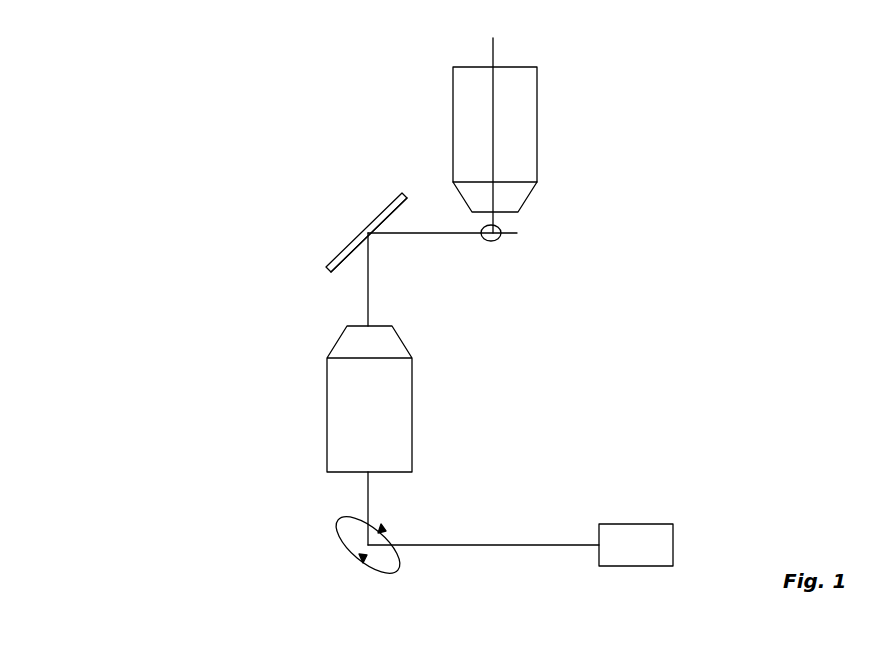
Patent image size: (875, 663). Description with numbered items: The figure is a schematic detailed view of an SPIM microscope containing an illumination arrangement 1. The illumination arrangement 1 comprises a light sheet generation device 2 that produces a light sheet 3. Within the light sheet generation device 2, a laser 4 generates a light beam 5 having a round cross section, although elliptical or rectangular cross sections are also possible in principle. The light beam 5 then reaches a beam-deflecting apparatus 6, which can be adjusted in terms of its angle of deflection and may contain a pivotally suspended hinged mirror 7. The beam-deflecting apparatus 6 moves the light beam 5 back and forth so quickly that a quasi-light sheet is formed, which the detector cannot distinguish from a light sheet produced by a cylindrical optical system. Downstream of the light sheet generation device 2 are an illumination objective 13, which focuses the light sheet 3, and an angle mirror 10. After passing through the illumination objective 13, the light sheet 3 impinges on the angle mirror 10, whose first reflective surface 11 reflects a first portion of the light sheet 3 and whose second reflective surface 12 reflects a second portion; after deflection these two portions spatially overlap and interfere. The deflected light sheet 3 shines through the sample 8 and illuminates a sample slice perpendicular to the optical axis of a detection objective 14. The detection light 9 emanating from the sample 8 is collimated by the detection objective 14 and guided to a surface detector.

The illumination arrangement 1 is at (179, 163).
The light sheet generation device 2 is at (554, 428).
The light sheet 3 is at (370, 265).
The laser 4 is at (643, 538).
The light beam 5 is at (532, 545).
The beam-deflecting apparatus 6 is at (317, 550).
The hinged mirror 7 is at (387, 563).
The sample 8 is at (483, 242).
The detection light 9 is at (495, 58).
The angle mirror 10 is at (341, 196).
The first reflective surface 11 is at (333, 271).
The second reflective surface 12 is at (393, 215).
The illumination objective 13 is at (395, 417).
The detection objective 14 is at (525, 110).